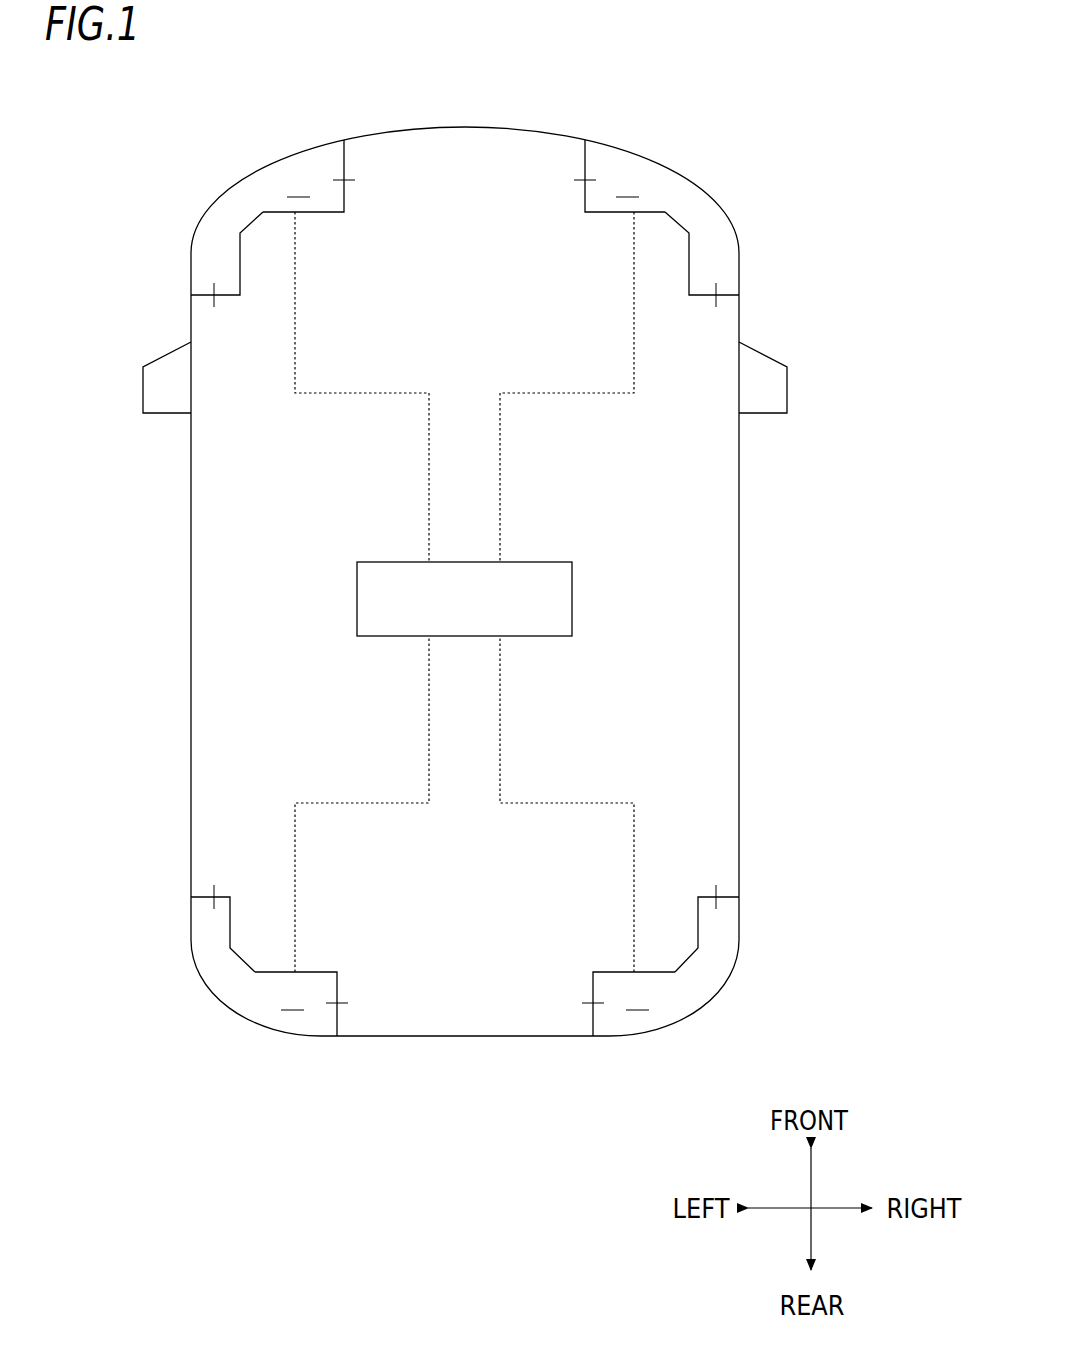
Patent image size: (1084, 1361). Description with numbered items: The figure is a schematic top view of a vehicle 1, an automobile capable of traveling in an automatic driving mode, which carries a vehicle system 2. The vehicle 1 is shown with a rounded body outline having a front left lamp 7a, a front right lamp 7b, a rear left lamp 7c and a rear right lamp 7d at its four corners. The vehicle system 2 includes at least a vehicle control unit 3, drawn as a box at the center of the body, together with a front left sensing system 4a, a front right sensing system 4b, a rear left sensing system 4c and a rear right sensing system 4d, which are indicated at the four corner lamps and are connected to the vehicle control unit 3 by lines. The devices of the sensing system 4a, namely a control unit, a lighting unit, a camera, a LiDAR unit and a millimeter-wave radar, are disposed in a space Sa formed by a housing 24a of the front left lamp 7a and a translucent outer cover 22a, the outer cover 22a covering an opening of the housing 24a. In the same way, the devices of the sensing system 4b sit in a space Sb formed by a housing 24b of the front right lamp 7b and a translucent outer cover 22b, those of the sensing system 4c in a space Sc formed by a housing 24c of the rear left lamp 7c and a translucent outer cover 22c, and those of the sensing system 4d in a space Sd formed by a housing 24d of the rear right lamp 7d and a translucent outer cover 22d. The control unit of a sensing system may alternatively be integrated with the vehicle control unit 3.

The vehicle 1 is at (164, 184).
The vehicle system 2 is at (522, 652).
The vehicle control unit 3 is at (520, 562).
The front left sensing system 4a is at (261, 194).
The front right sensing system 4b is at (667, 192).
The rear left sensing system 4c is at (248, 996).
The rear right sensing system 4d is at (682, 998).
The front left lamp 7a is at (305, 157).
The front right lamp 7b is at (625, 157).
The rear left lamp 7c is at (307, 1025).
The rear right lamp 7d is at (620, 1027).
The translucent outer cover 22a is at (308, 148).
The translucent outer cover 22b is at (625, 150).
The translucent outer cover 22c is at (190, 935).
The translucent outer cover 22d is at (740, 935).
The housing 24a is at (323, 213).
The housing 24b is at (605, 213).
The housing 24c is at (232, 915).
The housing 24d is at (698, 915).